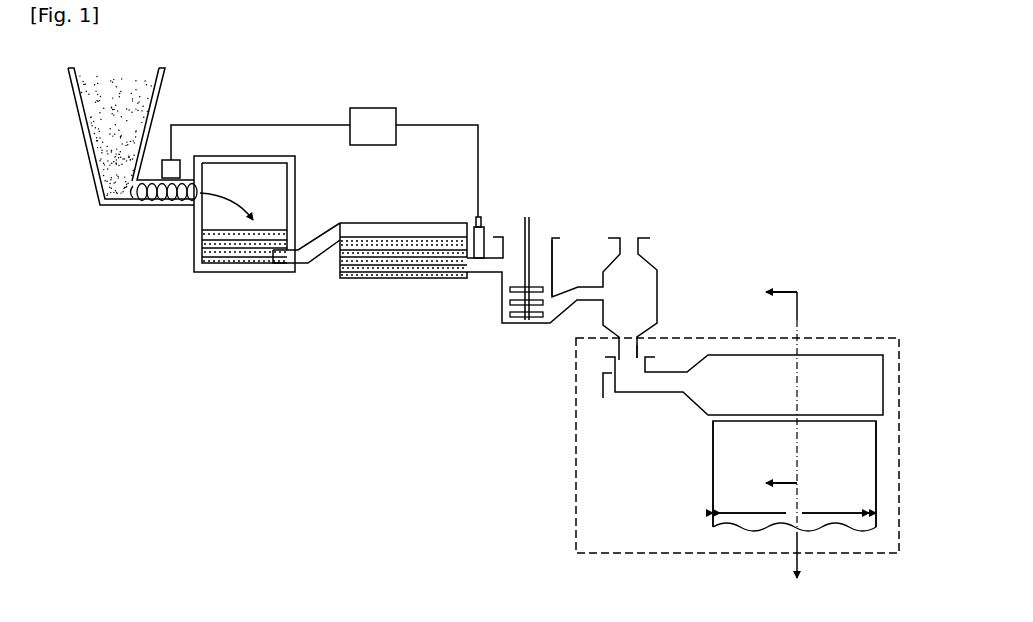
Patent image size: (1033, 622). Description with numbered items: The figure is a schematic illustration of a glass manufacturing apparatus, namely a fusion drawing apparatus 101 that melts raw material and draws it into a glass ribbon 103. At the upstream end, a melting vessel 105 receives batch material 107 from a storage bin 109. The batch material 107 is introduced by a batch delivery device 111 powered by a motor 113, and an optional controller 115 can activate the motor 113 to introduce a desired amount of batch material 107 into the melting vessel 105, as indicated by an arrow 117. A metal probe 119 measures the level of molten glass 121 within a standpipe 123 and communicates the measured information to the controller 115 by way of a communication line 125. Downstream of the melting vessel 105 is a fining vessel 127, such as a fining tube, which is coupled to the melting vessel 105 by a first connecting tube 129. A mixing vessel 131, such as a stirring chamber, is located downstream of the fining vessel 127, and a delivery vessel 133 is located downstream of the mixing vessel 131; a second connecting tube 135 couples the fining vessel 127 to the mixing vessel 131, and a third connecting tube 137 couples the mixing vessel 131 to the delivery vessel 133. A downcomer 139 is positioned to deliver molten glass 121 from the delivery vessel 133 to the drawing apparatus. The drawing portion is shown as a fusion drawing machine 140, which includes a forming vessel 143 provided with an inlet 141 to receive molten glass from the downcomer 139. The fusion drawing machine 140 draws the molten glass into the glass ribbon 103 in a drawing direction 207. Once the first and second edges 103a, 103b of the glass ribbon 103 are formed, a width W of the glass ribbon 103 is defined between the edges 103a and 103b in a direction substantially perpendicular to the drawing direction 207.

The fusion drawing apparatus 101 is at (656, 154).
The glass ribbon 103 is at (868, 453).
The first edge 103a is at (713, 468).
The second edge 103b is at (876, 487).
The melting vessel 105 is at (222, 300).
The batch material 107 is at (108, 72).
The storage bin 109 is at (83, 137).
The batch delivery device 111 is at (150, 207).
The motor 113 is at (181, 158).
The controller 115 is at (372, 108).
The arrow 117 is at (222, 193).
The metal probe 119 is at (476, 220).
The molten glass 121 is at (270, 229).
The standpipe 123 is at (486, 236).
The communication line 125 is at (437, 125).
The fining vessel 127 is at (395, 223).
The first connecting tube 129 is at (321, 238).
The mixing vessel 131 is at (553, 254).
The delivery vessel 133 is at (658, 279).
The second connecting tube 135 is at (487, 274).
The third connecting tube 137 is at (567, 311).
The downcomer 139 is at (640, 346).
The fusion drawing machine 140 is at (893, 338).
The inlet 141 is at (604, 390).
The forming vessel 143 is at (848, 355).
The drawing direction 207 is at (800, 553).